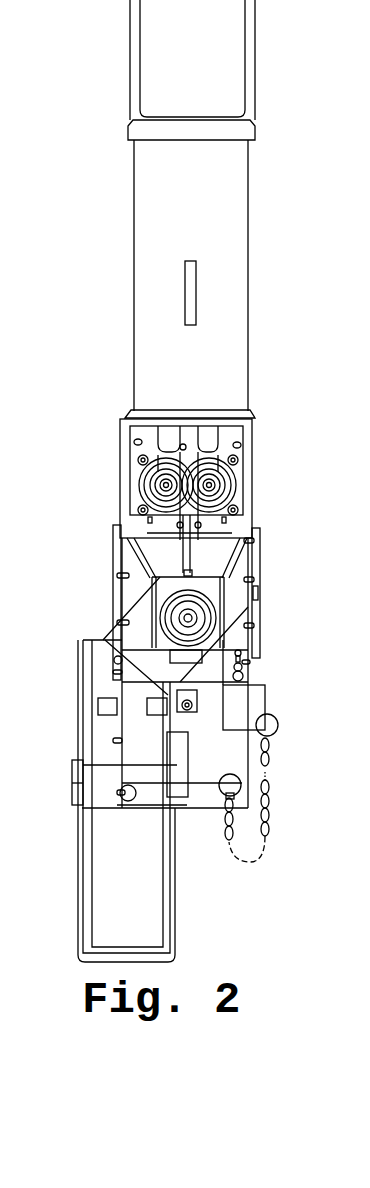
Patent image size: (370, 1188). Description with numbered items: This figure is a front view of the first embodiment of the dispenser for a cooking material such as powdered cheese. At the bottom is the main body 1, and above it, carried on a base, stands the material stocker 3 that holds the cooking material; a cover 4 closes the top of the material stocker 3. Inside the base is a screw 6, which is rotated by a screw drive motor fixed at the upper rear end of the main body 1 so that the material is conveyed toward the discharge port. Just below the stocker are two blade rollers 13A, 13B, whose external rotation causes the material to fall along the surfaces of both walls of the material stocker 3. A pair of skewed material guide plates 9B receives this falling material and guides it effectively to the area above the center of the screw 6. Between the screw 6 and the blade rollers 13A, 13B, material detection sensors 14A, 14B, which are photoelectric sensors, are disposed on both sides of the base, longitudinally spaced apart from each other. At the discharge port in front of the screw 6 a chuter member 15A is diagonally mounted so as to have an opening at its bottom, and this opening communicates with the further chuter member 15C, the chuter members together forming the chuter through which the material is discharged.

The main body 1 is at (202, 753).
The material stocker 3 is at (248, 214).
The cover 4 is at (160, 42).
The screw 6 is at (198, 620).
The material guide plates 9B is at (235, 565).
The blade roller 13A is at (145, 478).
The blade roller 13B is at (230, 470).
The material detection sensor 14A is at (113, 592).
The material detection sensor 14B is at (145, 593).
The chuter member 15A is at (160, 665).
The chuter member 15C is at (140, 893).